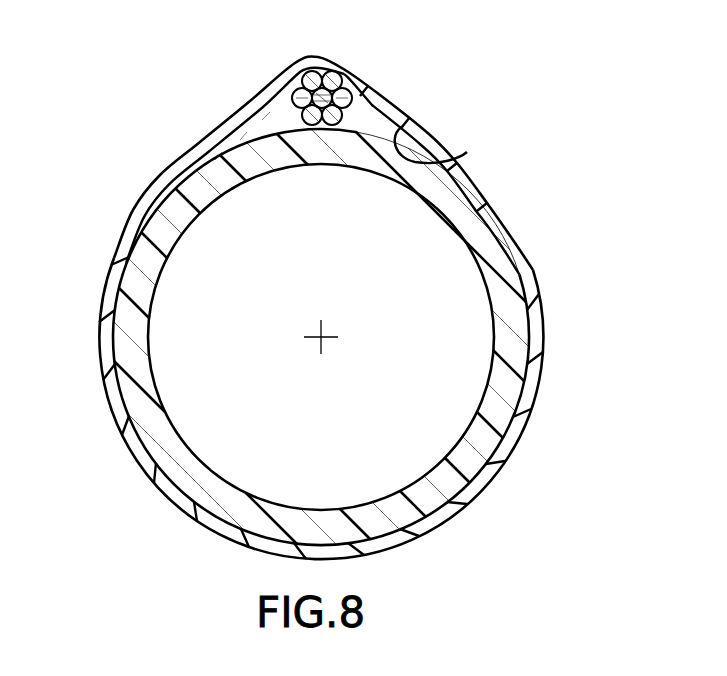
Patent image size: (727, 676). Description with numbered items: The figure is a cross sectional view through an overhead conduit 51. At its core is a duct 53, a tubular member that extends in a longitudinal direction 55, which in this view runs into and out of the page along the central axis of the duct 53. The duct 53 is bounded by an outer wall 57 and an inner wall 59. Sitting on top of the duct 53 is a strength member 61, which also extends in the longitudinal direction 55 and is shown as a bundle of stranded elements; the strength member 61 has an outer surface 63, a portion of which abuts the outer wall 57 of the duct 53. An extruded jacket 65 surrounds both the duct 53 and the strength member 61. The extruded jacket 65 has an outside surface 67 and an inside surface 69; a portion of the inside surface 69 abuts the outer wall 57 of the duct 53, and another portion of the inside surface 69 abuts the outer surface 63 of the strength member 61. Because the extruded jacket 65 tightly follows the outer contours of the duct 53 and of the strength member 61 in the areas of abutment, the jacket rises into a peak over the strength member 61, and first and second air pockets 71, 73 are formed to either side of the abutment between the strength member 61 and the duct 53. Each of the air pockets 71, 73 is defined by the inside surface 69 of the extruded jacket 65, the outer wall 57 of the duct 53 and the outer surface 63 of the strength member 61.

The overhead conduit 51 is at (124, 186).
The duct 53 is at (468, 216).
The longitudinal direction 55 is at (342, 323).
The outer wall 57 is at (410, 108).
The inner wall 59 is at (367, 166).
The strength member 61 is at (278, 105).
The outer surface 63 is at (360, 84).
The extruded jacket 65 is at (411, 116).
The outside surface 67 is at (494, 192).
The inside surface 69 is at (432, 165).
The first air pocket 71 is at (380, 93).
The second air pocket 73 is at (267, 123).